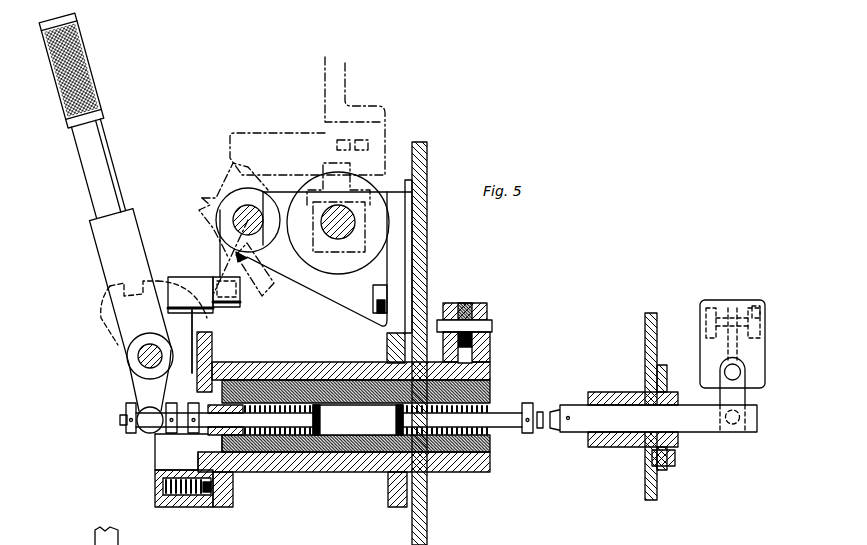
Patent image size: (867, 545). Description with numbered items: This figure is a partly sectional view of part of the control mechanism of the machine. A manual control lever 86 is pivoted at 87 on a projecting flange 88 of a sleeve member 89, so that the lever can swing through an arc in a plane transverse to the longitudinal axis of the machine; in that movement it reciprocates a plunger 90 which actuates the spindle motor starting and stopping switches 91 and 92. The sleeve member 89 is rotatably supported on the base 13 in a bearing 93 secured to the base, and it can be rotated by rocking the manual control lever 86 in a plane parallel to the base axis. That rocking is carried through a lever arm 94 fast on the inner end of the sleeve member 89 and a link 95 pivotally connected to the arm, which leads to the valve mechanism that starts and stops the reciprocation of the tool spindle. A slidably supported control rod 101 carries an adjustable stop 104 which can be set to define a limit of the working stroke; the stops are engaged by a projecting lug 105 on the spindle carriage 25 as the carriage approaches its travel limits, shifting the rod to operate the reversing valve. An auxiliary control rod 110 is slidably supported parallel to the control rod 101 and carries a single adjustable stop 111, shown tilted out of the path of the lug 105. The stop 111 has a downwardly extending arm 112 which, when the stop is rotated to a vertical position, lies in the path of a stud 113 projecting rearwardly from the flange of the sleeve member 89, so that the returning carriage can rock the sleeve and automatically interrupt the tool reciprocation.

The base 13 is at (427, 527).
The spindle carriage 25 is at (346, 90).
The manual control lever 86 is at (90, 168).
The pivot 87 is at (143, 358).
The projecting flange 88 is at (117, 343).
The sleeve member 89 is at (310, 452).
The plunger 90 is at (514, 408).
The spindle motor switch 91 is at (757, 302).
The spindle motor switch 92 is at (728, 356).
The bearing 93 is at (388, 490).
The lever arm 94 is at (490, 360).
The link 95 is at (463, 306).
The control rod 101 is at (351, 200).
The adjustable stop 104 is at (330, 163).
The projecting lug 105 is at (258, 133).
The auxiliary control rod 110 is at (236, 224).
The adjustable stop 111 is at (216, 195).
The downwardly extending arm 112 is at (270, 294).
The stud 113 is at (233, 313).